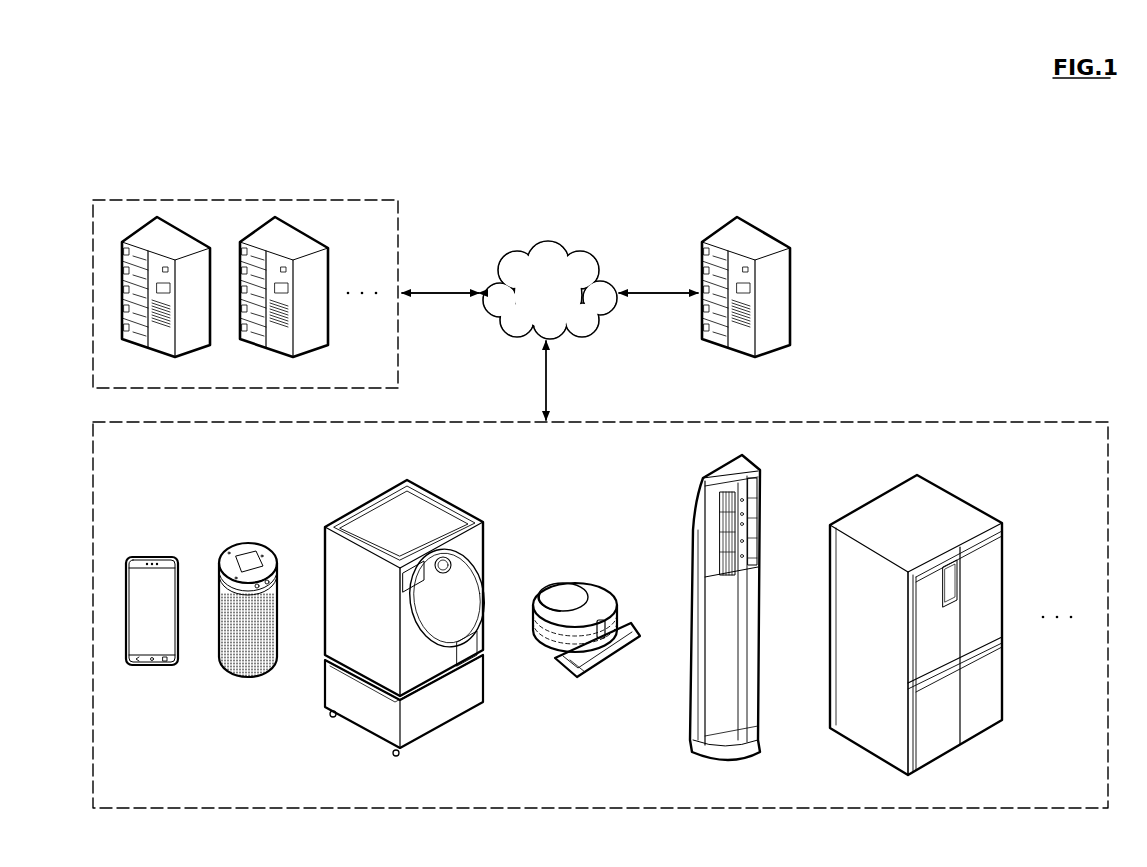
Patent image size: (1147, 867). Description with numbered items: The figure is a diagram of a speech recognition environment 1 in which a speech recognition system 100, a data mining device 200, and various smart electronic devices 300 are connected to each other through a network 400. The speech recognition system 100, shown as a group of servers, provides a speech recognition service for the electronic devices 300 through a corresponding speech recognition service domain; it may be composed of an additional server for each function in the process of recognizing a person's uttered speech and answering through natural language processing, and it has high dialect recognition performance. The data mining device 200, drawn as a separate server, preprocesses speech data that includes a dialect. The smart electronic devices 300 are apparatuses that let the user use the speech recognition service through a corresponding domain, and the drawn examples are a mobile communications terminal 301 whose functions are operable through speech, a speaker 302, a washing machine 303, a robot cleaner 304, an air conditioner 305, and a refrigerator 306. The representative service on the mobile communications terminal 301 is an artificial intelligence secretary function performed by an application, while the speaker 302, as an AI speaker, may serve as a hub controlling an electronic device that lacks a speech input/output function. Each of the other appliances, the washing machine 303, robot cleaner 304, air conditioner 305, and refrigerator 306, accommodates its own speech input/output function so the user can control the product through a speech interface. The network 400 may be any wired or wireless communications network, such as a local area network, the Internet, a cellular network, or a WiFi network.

The speech recognition environment 1 is at (479, 148).
The speech recognition system 100 is at (354, 199).
The data mining device 200 is at (762, 232).
The smart electronic devices 300 is at (1068, 423).
The mobile communications terminal 301 is at (152, 555).
The speaker 302 is at (265, 548).
The washing machine 303 is at (443, 497).
The robot cleaner 304 is at (597, 583).
The air conditioner 305 is at (764, 486).
The refrigerator 306 is at (966, 500).
The network 400 is at (546, 242).